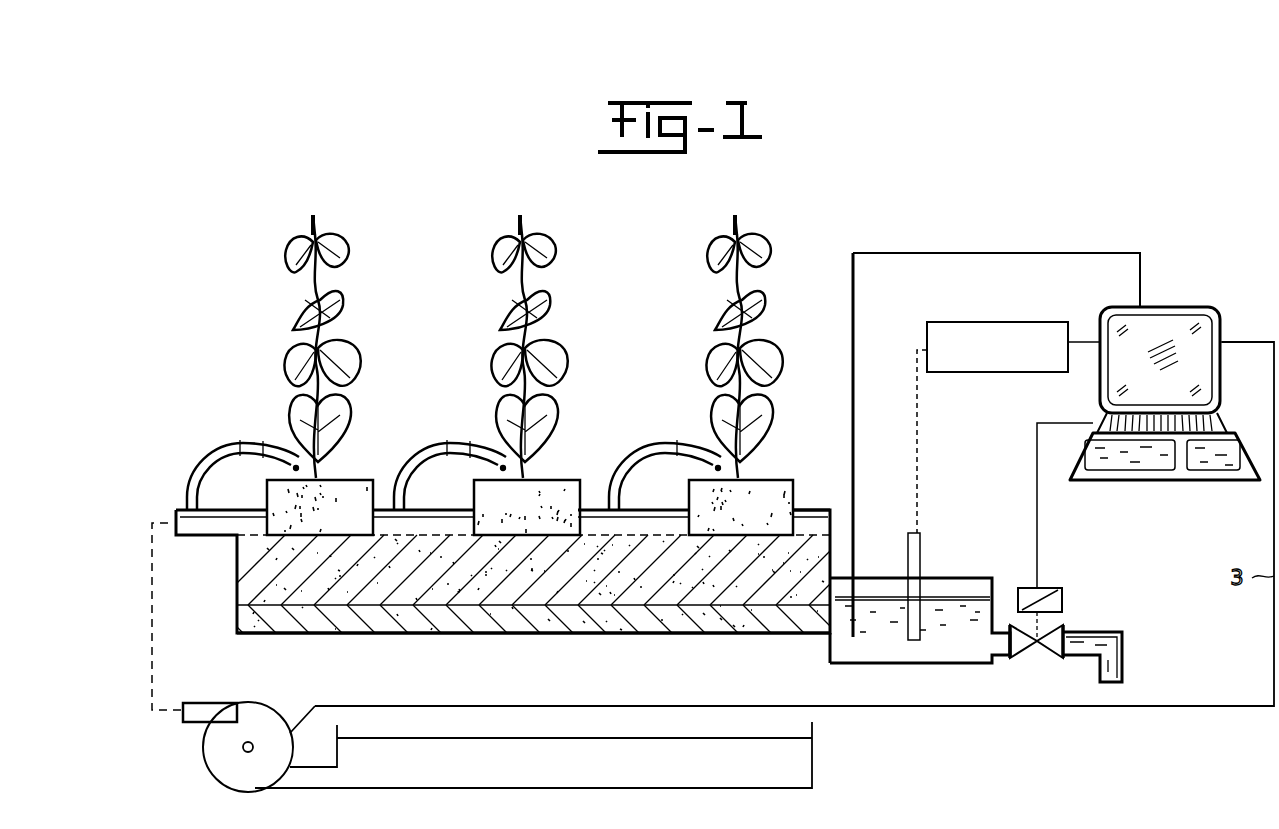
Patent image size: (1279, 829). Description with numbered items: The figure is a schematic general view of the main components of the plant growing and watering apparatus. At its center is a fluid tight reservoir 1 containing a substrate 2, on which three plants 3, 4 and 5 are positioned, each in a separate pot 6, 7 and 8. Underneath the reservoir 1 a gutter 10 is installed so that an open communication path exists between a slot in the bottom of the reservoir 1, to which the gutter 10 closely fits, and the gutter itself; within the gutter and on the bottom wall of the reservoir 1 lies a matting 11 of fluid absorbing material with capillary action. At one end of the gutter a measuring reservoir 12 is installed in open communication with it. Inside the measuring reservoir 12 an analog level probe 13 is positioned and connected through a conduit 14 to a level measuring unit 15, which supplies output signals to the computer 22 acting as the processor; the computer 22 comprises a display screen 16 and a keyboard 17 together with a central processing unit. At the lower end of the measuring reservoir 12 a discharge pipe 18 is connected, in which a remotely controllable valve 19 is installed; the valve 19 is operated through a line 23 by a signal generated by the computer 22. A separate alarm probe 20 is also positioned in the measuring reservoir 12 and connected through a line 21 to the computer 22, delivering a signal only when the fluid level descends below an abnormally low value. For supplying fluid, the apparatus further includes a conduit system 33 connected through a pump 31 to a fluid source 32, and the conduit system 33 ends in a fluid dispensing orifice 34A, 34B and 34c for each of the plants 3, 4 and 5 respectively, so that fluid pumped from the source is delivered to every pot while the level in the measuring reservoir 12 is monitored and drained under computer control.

The fluid tight reservoir 1 is at (237, 572).
The substrate 2 is at (440, 630).
The plant 3 is at (340, 300).
The plant 4 is at (541, 346).
The plant 5 is at (757, 346).
The pot 6 is at (356, 490).
The pot 7 is at (563, 490).
The pot 8 is at (773, 490).
The gutter 10 is at (562, 633).
The matting 11 is at (656, 633).
The measuring reservoir 12 is at (960, 585).
The analog level probe 13 is at (920, 558).
The conduit 14 is at (917, 460).
The level measuring unit 15 is at (964, 372).
The display screen 16 is at (1175, 325).
The keyboard 17 is at (1213, 455).
The discharge pipe 18 is at (1125, 668).
The remotely controllable valve 19 is at (1053, 645).
The alarm probe 20 is at (853, 556).
The line 21 is at (976, 253).
The computer 22 is at (1148, 442).
The line 23 is at (1040, 507).
The pump 31 is at (262, 722).
The fluid source 32 is at (790, 762).
The conduit system 33 is at (198, 712).
The fluid dispensing orifice 34A is at (240, 452).
The fluid dispensing orifice 34B is at (450, 460).
The fluid dispensing orifice 34c is at (665, 458).